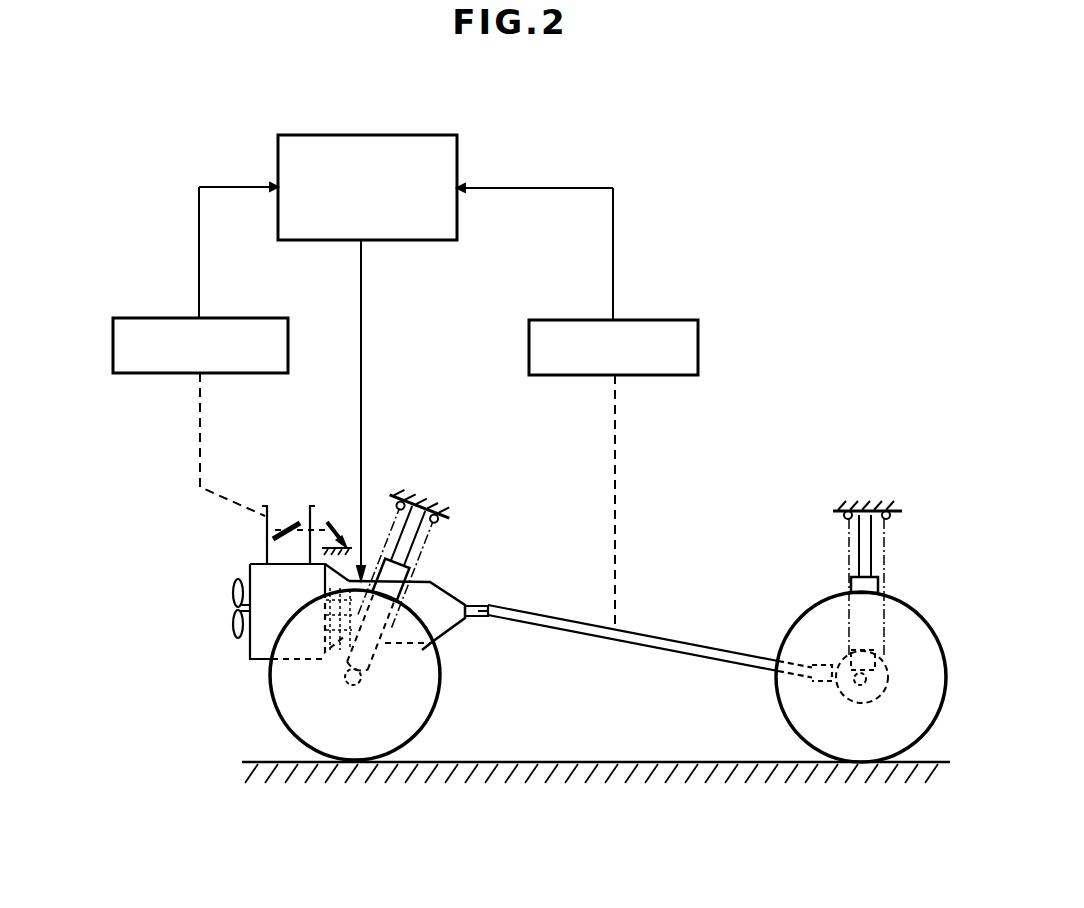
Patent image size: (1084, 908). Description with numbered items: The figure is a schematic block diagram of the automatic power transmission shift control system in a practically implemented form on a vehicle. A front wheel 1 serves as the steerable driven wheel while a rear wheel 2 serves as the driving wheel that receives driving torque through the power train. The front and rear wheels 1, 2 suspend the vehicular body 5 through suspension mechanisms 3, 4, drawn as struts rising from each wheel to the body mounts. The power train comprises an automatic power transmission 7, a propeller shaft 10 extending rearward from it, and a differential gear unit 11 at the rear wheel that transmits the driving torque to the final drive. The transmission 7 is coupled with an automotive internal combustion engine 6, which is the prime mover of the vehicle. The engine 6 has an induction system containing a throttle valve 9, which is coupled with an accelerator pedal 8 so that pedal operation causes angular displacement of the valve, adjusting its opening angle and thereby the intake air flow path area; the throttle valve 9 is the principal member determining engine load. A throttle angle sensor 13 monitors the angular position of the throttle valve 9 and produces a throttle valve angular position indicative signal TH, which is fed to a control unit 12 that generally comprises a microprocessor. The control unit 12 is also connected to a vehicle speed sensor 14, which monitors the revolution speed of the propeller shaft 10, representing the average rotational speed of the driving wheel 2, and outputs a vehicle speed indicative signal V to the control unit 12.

The front wheel 1 is at (280, 716).
The rear wheel 2 is at (916, 616).
The suspension mechanism 3 is at (391, 518).
The suspension mechanism 4 is at (890, 548).
The vehicular body 5 is at (440, 503).
The automotive internal combustion engine 6 is at (248, 578).
The automatic power transmission 7 is at (452, 622).
The accelerator pedal 8 is at (340, 518).
The throttle valve 9 is at (296, 519).
The propeller shaft 10 is at (740, 650).
The differential gear unit 11 is at (842, 698).
The control unit 12 is at (430, 134).
The throttle angle sensor 13 is at (150, 318).
The vehicle speed sensor 14 is at (680, 320).